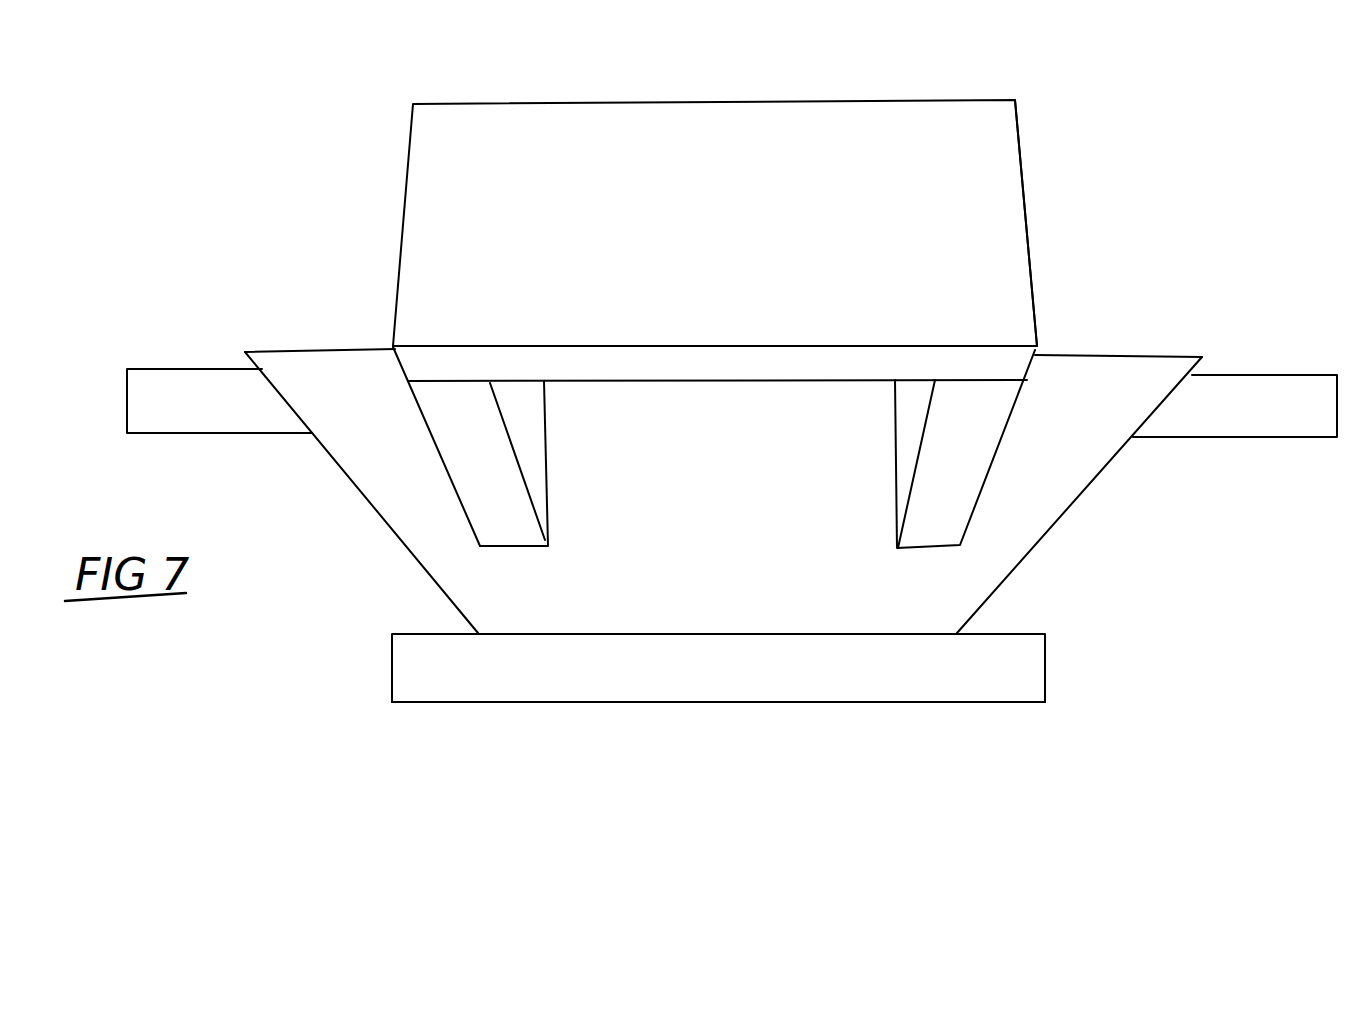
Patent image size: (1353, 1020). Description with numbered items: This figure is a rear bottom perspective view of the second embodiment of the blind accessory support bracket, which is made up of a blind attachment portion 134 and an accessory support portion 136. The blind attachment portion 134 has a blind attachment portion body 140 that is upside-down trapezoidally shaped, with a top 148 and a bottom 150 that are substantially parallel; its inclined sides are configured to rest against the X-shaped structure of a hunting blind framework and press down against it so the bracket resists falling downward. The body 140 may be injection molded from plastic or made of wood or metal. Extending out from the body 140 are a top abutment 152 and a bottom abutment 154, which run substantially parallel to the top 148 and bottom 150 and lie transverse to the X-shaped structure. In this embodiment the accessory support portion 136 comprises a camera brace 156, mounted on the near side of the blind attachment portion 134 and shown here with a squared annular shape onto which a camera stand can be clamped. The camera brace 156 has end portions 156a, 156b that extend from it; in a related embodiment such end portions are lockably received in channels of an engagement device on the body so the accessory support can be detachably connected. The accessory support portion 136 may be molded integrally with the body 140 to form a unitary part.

The camera brace 156 is at (1030, 201).
The accessory support portion 136 is at (1040, 312).
The top 148 is at (341, 352).
The end portion 156a is at (540, 444).
The end portion 156b is at (898, 420).
The blind attachment portion body 140 is at (383, 498).
The blind attachment portion 134 is at (1068, 512).
The top abutment 152 is at (165, 385).
The bottom 150 is at (780, 703).
The bottom abutment 154 is at (723, 683).